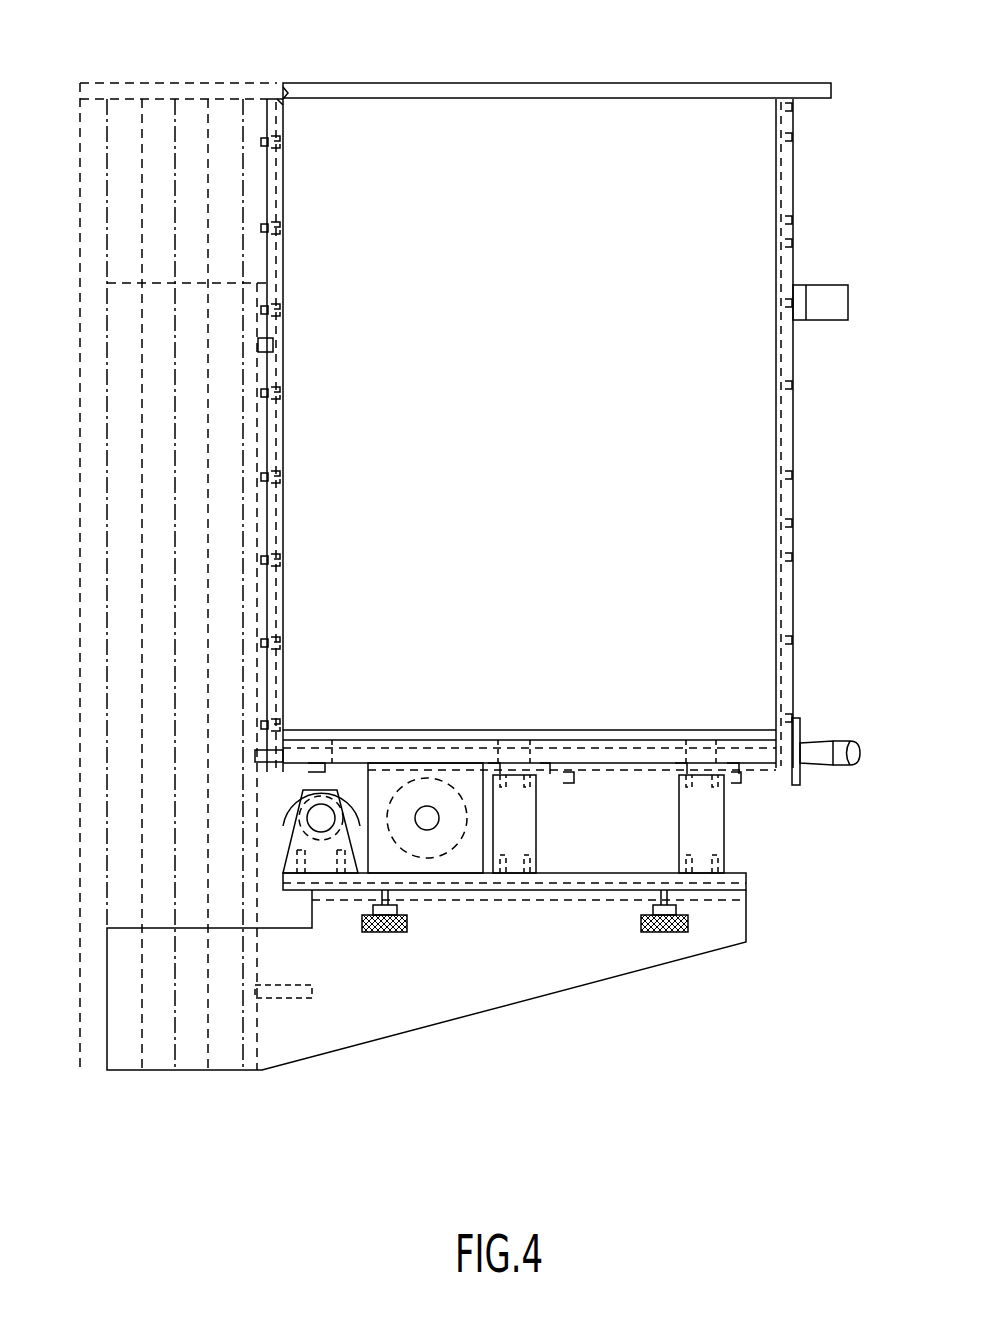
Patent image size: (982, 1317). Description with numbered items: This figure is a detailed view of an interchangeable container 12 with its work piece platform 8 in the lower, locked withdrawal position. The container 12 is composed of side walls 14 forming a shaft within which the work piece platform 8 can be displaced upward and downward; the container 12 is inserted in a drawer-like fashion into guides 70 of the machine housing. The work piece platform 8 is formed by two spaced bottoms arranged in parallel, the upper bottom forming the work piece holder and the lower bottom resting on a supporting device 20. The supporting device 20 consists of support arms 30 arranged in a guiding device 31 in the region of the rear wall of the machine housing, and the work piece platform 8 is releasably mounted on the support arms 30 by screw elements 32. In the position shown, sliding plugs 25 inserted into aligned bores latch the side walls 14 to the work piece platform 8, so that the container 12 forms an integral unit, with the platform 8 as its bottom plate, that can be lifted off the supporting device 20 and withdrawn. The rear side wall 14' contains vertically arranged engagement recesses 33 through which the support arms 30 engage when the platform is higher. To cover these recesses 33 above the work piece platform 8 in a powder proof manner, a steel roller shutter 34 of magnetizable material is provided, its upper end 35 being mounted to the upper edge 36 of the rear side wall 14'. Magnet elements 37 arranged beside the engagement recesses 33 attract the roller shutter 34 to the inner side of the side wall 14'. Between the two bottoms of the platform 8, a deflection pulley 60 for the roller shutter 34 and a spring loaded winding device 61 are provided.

The work piece platform 8 is at (756, 782).
The interchangeable container 12 is at (806, 437).
The side walls 14 is at (825, 433).
The rear side wall 14' is at (326, 435).
The supporting device 20 is at (452, 978).
The sliding plugs 25 is at (855, 748).
The support arms 30 is at (491, 878).
The guiding device 31 is at (125, 623).
The screw elements 32 is at (384, 935).
The engagement recesses 33 is at (283, 440).
The roller shutter 34 is at (285, 603).
The upper end 35 is at (277, 101).
The upper edge 36 is at (283, 100).
The magnet elements 37 is at (284, 408).
The deflection pulley 60 is at (298, 804).
The spring loaded winding device 61 is at (437, 849).
The guides 70 is at (669, 92).